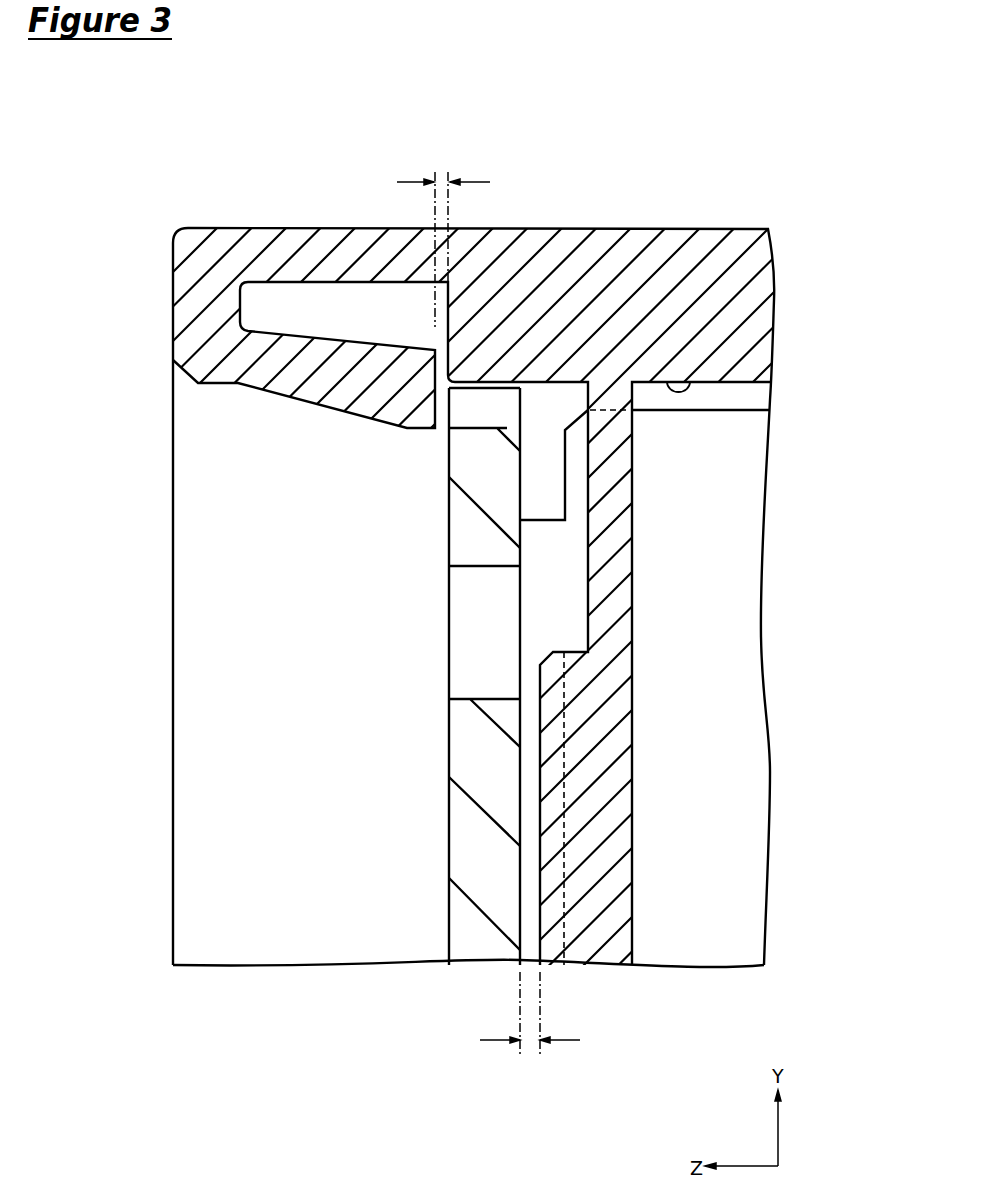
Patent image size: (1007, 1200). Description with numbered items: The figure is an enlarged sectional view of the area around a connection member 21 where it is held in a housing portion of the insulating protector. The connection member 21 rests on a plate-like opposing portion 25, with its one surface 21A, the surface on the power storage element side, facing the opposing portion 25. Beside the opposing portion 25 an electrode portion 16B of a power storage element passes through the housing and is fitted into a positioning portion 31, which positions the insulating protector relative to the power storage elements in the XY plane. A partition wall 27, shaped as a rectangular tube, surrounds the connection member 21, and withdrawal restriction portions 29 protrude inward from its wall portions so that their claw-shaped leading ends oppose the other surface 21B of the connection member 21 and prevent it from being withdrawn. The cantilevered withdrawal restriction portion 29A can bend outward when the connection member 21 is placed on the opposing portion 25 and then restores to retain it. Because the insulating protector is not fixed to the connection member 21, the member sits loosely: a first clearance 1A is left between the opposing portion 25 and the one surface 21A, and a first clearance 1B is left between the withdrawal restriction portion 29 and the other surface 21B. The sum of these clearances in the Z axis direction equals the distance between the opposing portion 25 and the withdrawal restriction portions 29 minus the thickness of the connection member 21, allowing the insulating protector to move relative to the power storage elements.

The partition wall 27 is at (178, 240).
The withdrawal restriction portion 29 is at (246, 355).
The withdrawal restriction portion 29A is at (350, 388).
The positioning portion 31 is at (690, 380).
The first clearance 1B is at (441, 182).
The first clearance 1A is at (530, 1040).
The electrode portion 16B is at (519, 722).
The connection member 21 is at (451, 676).
The one surface 21A is at (519, 632).
The other surface 21B is at (448, 748).
The opposing portion 25 is at (572, 827).